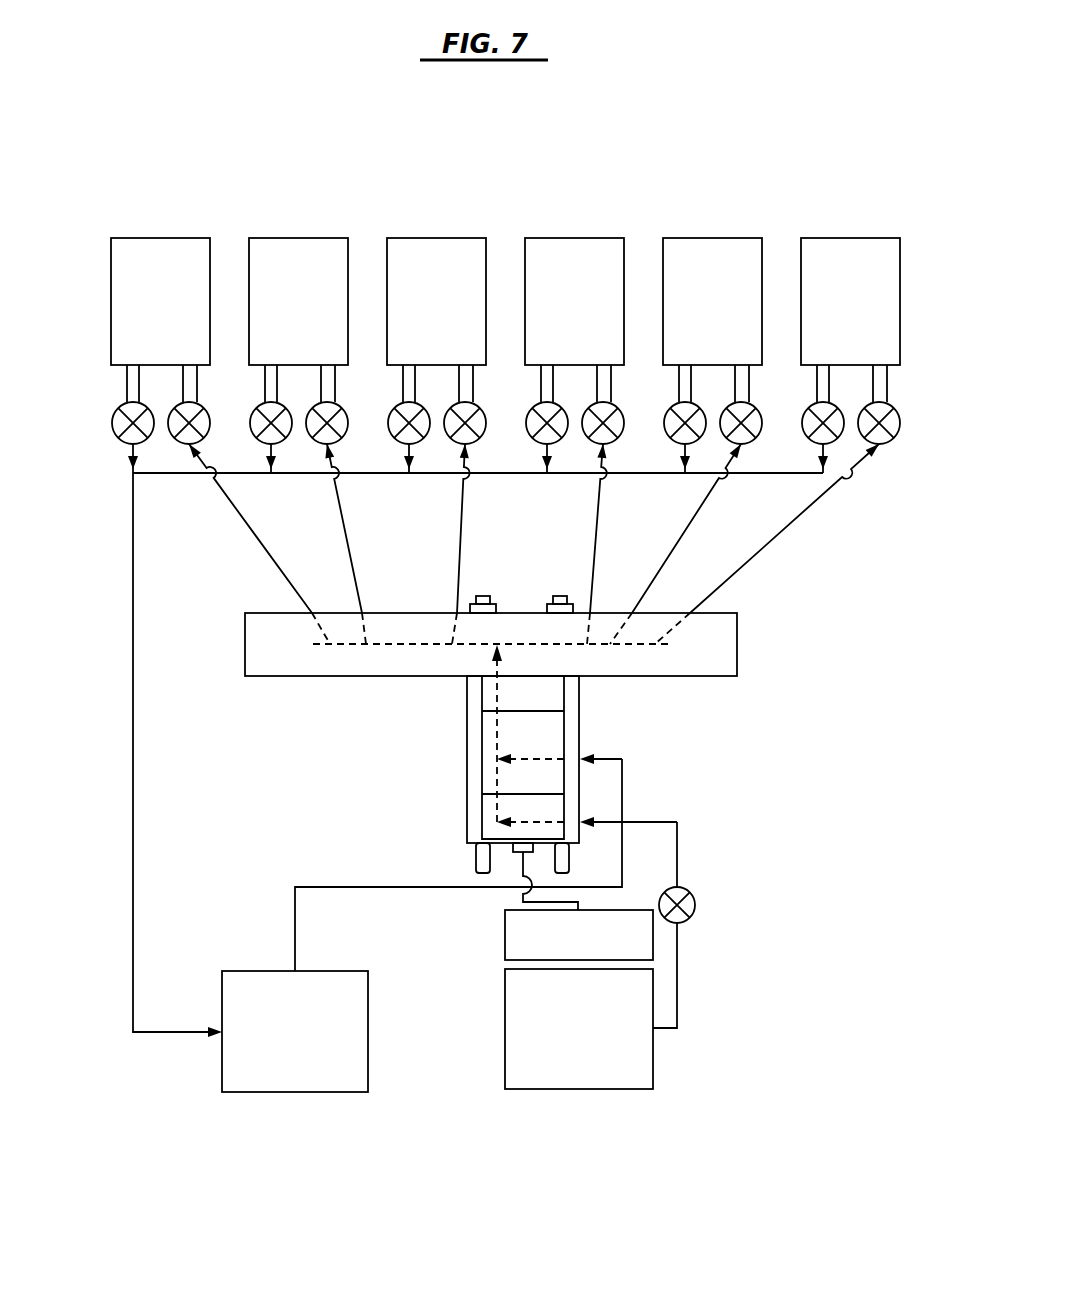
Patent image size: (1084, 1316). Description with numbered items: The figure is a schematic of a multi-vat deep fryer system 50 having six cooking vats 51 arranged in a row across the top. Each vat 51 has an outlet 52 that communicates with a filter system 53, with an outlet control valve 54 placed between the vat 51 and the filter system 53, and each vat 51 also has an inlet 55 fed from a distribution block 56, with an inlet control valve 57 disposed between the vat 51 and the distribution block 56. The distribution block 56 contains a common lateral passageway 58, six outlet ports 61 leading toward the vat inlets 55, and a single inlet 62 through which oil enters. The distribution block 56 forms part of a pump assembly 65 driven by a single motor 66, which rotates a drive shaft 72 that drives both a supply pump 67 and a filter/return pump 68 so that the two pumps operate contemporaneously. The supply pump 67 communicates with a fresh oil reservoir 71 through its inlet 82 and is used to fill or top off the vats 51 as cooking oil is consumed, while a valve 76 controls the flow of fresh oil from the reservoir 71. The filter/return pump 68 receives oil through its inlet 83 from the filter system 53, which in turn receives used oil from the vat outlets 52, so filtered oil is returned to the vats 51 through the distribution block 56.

The multi-vat deep fryer system 50 is at (637, 165).
The cooking vat 51 is at (832, 254).
The outlet 52 is at (127, 398).
The filter system 53 is at (257, 971).
The outlet control valve 54 is at (115, 437).
The inlet 55 is at (183, 398).
The distribution block 56 is at (738, 637).
The inlet control valve 57 is at (179, 437).
The common lateral passageway 58 is at (526, 644).
The outlet port 61 is at (311, 610).
The inlet 62 is at (492, 658).
The pump assembly 65 is at (402, 737).
The motor 66 is at (505, 944).
The supply pump 67 is at (466, 817).
The filter/return pump 68 is at (466, 753).
The fresh oil reservoir 71 is at (572, 1089).
The drive shaft 72 is at (521, 853).
The valve 76 is at (696, 893).
The inlet 82 is at (594, 817).
The inlet 83 is at (590, 753).